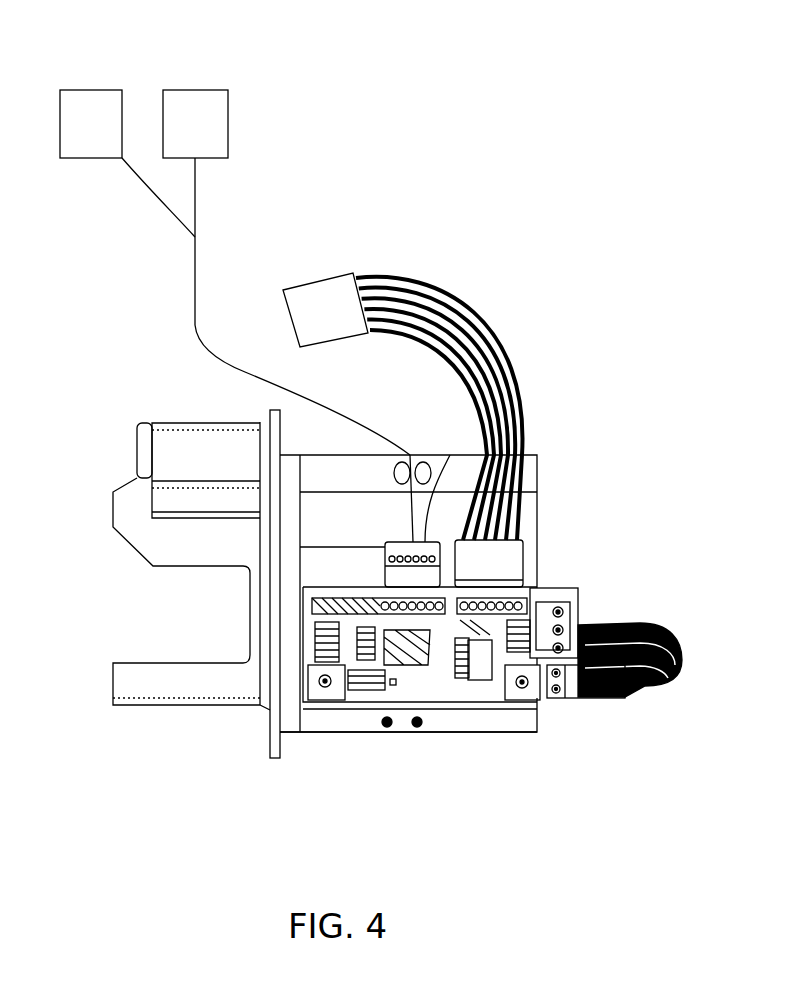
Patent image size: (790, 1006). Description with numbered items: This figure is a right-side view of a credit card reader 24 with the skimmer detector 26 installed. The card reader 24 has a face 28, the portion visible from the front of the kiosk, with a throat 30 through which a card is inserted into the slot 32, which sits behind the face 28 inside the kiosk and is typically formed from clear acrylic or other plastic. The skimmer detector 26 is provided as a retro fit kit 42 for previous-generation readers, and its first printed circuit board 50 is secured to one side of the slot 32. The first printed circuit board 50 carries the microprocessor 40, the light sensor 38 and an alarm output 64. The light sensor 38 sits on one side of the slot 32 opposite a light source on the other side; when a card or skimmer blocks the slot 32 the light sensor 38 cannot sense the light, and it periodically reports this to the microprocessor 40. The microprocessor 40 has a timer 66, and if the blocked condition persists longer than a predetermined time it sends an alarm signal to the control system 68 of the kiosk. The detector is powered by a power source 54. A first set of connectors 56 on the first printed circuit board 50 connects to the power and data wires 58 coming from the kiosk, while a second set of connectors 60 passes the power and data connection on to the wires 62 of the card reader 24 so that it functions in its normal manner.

The card reader 24 is at (268, 796).
The skimmer detector 26 is at (405, 750).
The face 28 is at (137, 457).
The throat 30 is at (247, 614).
The slot 32 is at (520, 508).
The light sensor 38 is at (352, 640).
The microprocessor 40 is at (343, 667).
The retro fit kit 42 is at (585, 718).
The first printed circuit board 50 is at (465, 708).
The power source 54 is at (92, 90).
The first set of connectors 56 is at (452, 455).
The wires 58 is at (195, 293).
The second set of connectors 60 is at (535, 568).
The wires 62 is at (530, 400).
The alarm output 64 is at (583, 600).
The timer 66 is at (350, 705).
The control system 68 is at (196, 90).